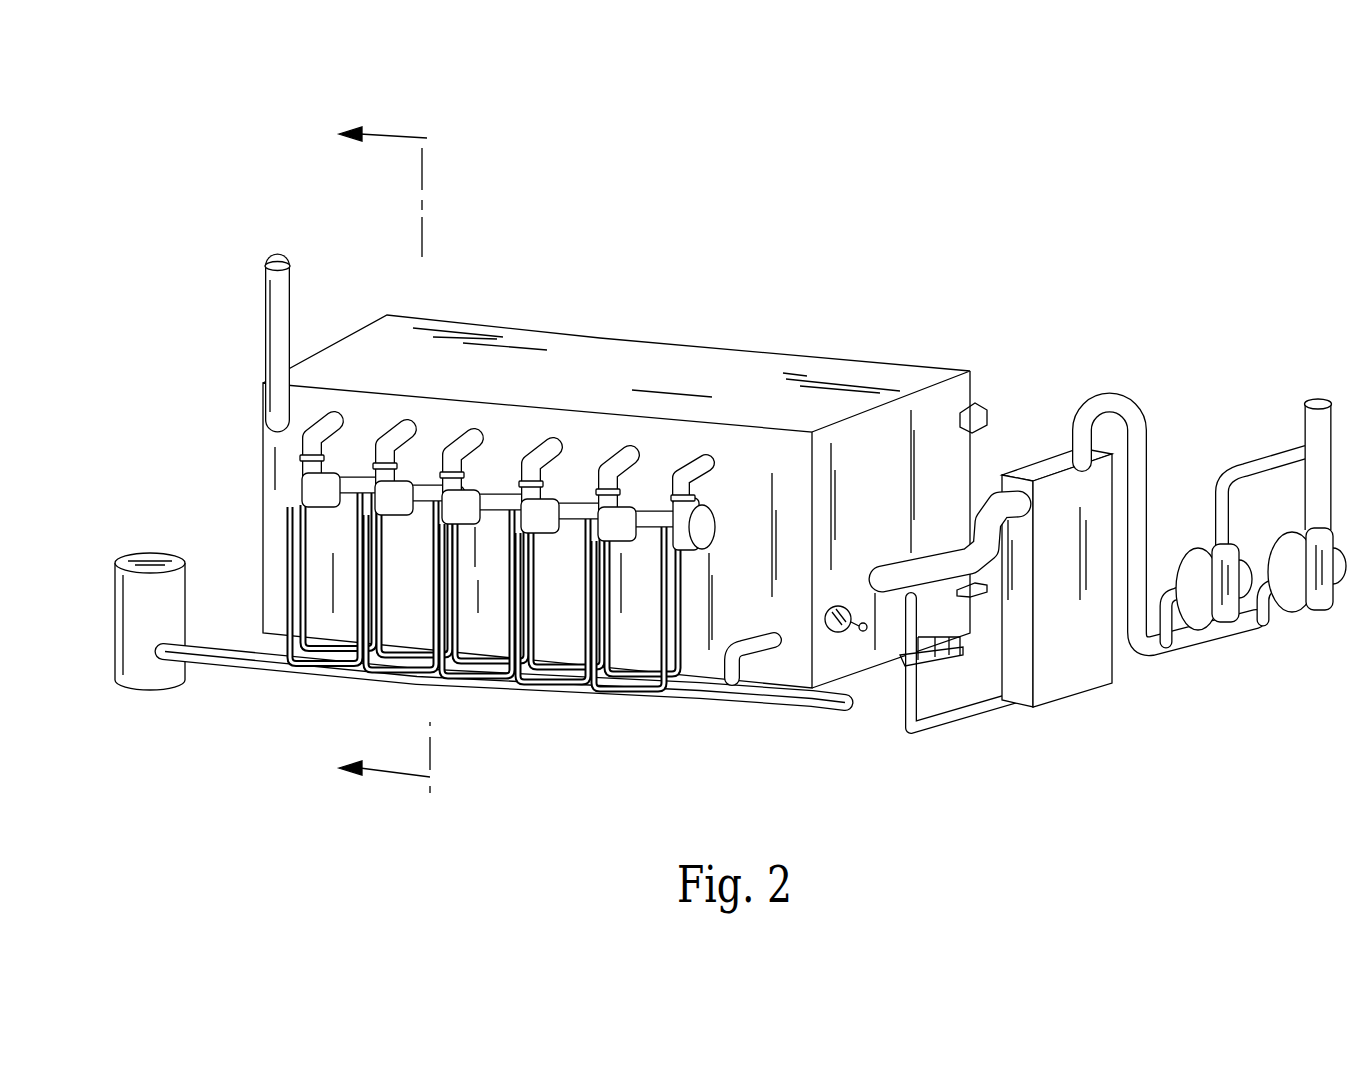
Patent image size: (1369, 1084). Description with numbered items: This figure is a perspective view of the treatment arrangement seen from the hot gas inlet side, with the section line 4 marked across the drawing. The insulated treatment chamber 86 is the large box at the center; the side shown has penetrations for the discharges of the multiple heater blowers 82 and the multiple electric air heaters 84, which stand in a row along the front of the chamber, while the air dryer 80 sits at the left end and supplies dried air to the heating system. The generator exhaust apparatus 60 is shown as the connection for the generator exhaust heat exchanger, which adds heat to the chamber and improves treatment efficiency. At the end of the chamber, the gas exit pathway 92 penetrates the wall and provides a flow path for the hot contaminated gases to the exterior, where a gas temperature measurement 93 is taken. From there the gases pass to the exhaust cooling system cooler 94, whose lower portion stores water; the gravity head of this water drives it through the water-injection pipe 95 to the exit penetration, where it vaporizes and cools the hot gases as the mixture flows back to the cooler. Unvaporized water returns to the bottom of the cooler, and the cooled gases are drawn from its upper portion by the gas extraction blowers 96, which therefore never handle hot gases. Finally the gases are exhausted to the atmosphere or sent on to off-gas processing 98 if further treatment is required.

The section line 4- 4 is at (384, 455).
The generator exhaust apparatus 60 is at (277, 299).
The air dryer 80 is at (132, 632).
The heater blower 82 is at (393, 495).
The electric air heater 84 is at (339, 410).
The insulated treatment chamber 86 is at (778, 360).
The gas exit pathway 92 is at (890, 560).
The gas temperature measurement 93 is at (843, 637).
The exhaust cooling system cooler 94 is at (1067, 505).
The exhaust cooling system water-injection pipe 95 is at (953, 723).
The gas extraction blower 96 is at (1202, 565).
The off-gas processing 98 is at (1315, 398).